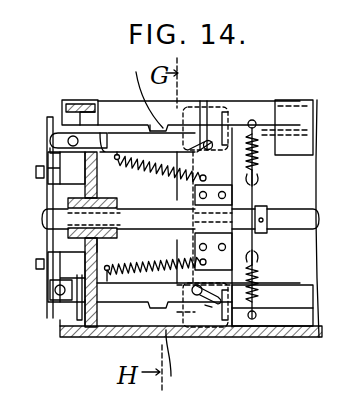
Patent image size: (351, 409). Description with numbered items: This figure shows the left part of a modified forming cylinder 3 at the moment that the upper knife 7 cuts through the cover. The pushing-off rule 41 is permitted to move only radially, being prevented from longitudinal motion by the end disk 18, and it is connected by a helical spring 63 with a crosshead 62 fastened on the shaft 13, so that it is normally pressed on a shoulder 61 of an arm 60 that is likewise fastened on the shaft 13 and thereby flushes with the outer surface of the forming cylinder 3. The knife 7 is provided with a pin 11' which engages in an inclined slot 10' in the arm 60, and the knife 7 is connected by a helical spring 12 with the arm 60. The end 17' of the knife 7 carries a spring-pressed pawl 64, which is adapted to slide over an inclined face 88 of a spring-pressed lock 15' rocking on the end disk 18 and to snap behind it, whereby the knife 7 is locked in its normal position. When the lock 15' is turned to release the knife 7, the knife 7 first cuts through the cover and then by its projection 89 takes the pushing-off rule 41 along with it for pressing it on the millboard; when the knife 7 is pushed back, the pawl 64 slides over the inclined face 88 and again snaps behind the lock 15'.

The forming cylinder 3 is at (272, 337).
The knife 7 is at (309, 101).
The inclined slot 10' is at (241, 225).
The pin 11' is at (203, 225).
The helical spring 12 is at (156, 216).
The shaft 13 is at (282, 224).
The spring-pressed lock 15' is at (58, 222).
The knife end 17' is at (101, 262).
The end disk 18 is at (99, 250).
The pushing-off rule 41 is at (127, 116).
The arm 60 is at (195, 198).
The shoulder 61 is at (215, 130).
The crosshead 62 is at (258, 196).
The helical spring 63 is at (262, 163).
The spring-pressed pawl 64 is at (44, 158).
The inclined face 88 is at (50, 142).
The projection 89 is at (150, 227).